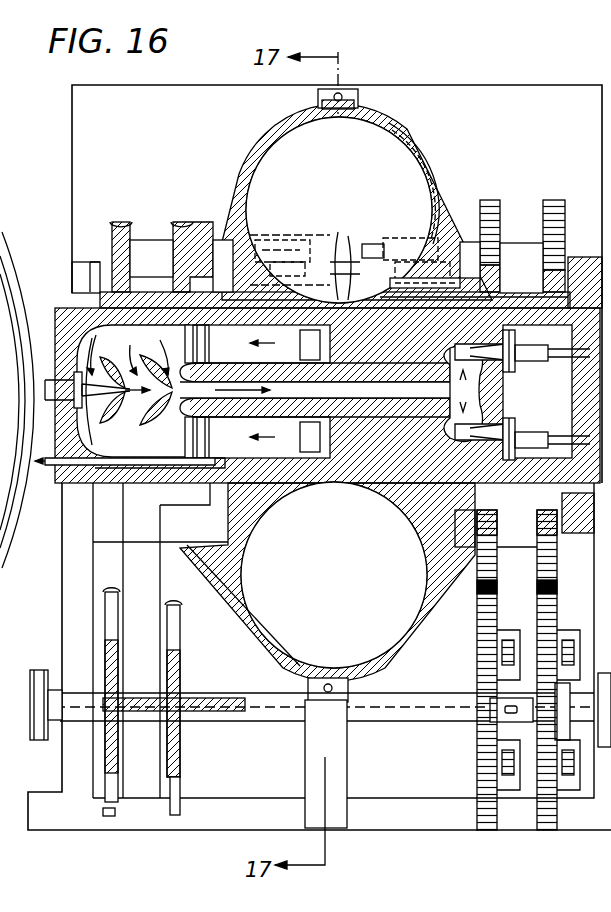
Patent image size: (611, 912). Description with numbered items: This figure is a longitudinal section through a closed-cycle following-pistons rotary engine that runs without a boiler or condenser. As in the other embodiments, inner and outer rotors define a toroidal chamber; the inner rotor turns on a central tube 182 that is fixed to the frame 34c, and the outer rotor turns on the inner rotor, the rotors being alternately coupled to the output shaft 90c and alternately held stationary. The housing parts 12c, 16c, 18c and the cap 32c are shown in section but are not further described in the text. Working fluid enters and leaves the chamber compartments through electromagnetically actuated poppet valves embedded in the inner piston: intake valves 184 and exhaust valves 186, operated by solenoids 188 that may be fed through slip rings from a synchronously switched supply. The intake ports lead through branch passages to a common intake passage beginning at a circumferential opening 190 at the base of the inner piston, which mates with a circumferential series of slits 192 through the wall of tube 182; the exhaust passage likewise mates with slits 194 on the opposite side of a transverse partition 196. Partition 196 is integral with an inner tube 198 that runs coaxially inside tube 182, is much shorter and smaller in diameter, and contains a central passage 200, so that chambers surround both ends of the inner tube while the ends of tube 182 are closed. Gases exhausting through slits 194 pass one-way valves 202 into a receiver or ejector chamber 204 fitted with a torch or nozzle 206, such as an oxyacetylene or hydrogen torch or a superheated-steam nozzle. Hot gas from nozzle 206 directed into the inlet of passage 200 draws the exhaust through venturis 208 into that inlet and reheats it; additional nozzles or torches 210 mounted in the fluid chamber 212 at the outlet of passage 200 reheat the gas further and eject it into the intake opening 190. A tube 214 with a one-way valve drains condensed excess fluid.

The housing wall 12c is at (438, 184).
The upper spherical vessel 16c is at (268, 151).
The lower spherical vessel 18c is at (245, 543).
The top cap 32c is at (318, 98).
The frame 34c is at (62, 764).
The output shaft 90c is at (403, 712).
The central tube 182 is at (77, 296).
The intake valves 184 is at (415, 240).
The exhaust valves 186 is at (316, 258).
The solenoids 188 is at (432, 268).
The circumferential opening 190 is at (343, 292).
The slits 192 is at (366, 430).
The slits 194 is at (306, 487).
The transverse partition 196 is at (448, 362).
The inner tube 198 is at (258, 372).
The central passage 200 is at (316, 390).
The one-way valves 202 is at (190, 343).
The receiver or ejector chamber 204 is at (140, 414).
The torch or nozzle 206 is at (63, 474).
The venturis 208 is at (108, 416).
The additional nozzles or torches 210 is at (508, 352).
The fluid chamber 212 is at (508, 418).
The tube 214 is at (78, 484).